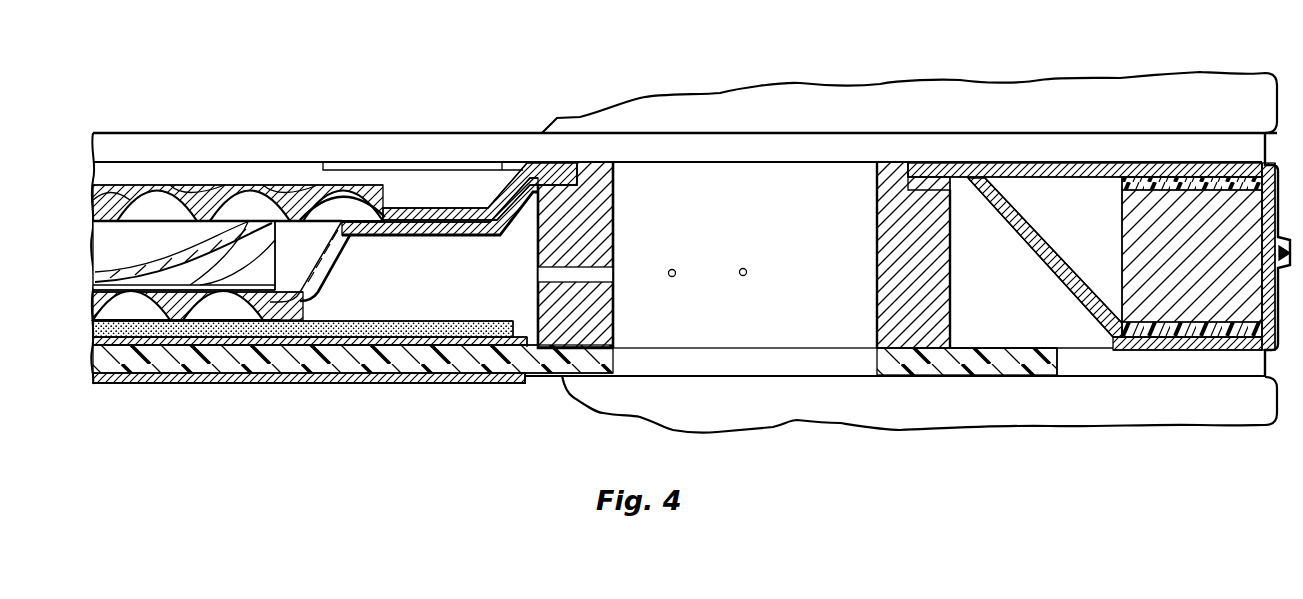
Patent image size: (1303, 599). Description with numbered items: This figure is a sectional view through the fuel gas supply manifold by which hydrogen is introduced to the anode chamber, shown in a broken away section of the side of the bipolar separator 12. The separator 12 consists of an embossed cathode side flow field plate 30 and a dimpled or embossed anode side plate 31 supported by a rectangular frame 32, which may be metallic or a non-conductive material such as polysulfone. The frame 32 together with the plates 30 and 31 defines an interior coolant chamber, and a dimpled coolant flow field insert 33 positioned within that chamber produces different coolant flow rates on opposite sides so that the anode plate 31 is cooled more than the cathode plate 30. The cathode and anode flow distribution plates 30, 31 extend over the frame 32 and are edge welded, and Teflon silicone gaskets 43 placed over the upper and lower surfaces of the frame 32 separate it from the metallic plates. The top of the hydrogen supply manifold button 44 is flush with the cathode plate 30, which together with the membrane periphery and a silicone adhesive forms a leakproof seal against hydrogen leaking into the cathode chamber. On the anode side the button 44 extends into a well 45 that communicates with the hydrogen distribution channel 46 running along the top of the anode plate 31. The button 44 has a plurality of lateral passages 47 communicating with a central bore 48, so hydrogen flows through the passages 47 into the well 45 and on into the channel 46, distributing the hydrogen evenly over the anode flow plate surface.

The bipolar separator 12 is at (444, 196).
The cathode side flow field plate 30 is at (955, 162).
The anode side plate 31 is at (420, 232).
The rectangular frame 32 is at (1146, 243).
The dimpled coolant flow field insert 33 is at (277, 265).
The Teflon silicone gaskets 43 is at (1125, 180).
The hydrogen supply manifold button 44 is at (620, 319).
The well 45 is at (1004, 301).
The hydrogen distribution channel 46 is at (438, 302).
The lateral passages 47 is at (538, 274).
The central bore 48 is at (762, 182).